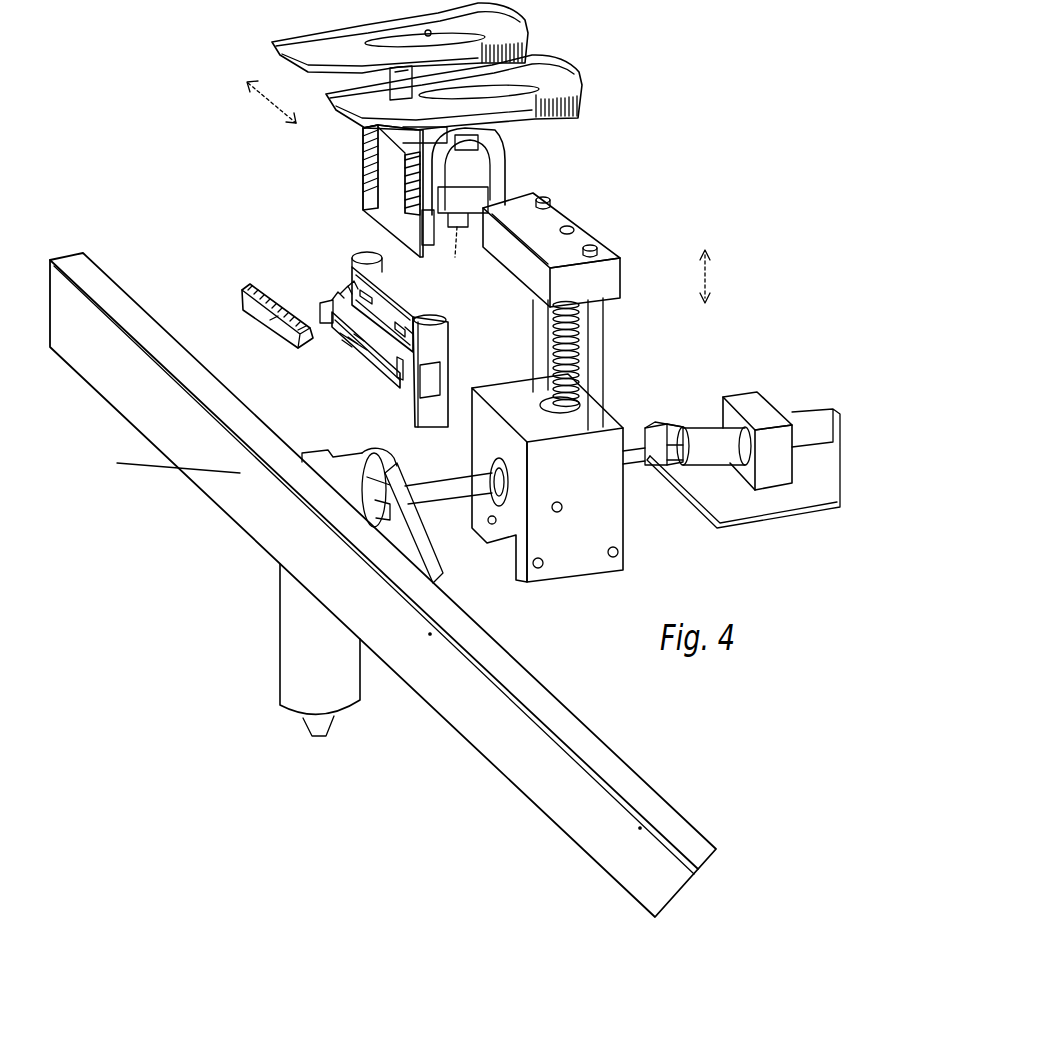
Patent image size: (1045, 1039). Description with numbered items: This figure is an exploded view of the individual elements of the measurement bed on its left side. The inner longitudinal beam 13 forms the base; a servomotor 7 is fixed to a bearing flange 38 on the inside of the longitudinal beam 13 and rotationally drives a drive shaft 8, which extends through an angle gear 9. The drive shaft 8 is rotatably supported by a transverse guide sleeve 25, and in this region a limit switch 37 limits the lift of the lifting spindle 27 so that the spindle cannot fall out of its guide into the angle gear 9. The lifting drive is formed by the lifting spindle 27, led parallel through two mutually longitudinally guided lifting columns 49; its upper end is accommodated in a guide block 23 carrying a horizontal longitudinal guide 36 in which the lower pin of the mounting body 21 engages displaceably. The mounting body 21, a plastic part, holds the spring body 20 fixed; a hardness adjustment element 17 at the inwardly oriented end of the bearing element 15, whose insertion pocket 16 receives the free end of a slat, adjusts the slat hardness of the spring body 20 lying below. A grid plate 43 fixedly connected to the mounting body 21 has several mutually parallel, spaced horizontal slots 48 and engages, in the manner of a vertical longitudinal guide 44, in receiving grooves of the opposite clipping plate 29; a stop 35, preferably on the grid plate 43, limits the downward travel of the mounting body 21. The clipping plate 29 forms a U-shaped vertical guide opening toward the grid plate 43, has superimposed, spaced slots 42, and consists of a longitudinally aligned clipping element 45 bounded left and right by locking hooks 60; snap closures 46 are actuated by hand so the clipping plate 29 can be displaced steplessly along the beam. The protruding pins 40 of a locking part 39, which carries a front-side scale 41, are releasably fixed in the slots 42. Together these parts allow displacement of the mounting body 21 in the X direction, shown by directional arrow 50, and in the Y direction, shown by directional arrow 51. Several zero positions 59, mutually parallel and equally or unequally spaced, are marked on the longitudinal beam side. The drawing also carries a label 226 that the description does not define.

The servomotor 7 is at (307, 610).
The drive shaft 8 is at (628, 440).
The angle gear 9 is at (608, 527).
The inner longitudinal beam 13 is at (105, 292).
The bearing element 15 is at (510, 28).
The insertion pocket 16 is at (537, 133).
The hardness adjustment element 17 is at (580, 107).
The spring body 20 is at (493, 163).
The mounting body 21 is at (377, 203).
The guide block 23 is at (572, 246).
The guide sleeve 25 is at (708, 417).
The lifting spindle 27 is at (583, 363).
The clipping plate 29 is at (387, 310).
The stop 35 is at (468, 138).
The longitudinal guide 36 is at (523, 258).
The limit switch 37 is at (667, 418).
The bearing flange 38 is at (413, 533).
The locking part 39 is at (240, 293).
The pin 40 is at (307, 345).
The scale 41 is at (280, 340).
The slot 42 is at (352, 262).
The grid plate 43 is at (366, 163).
The longitudinal guide 44 is at (368, 255).
The clipping element 45 is at (378, 355).
The snap closure 46 is at (367, 353).
The slots 48 is at (365, 140).
The lifting column 49 is at (607, 327).
The directional arrow 50 is at (263, 116).
The directional arrow 51 is at (712, 278).
The zero position 59 is at (97, 323).
The locking hook 60 is at (333, 307).
The contact 226 is at (417, 310).